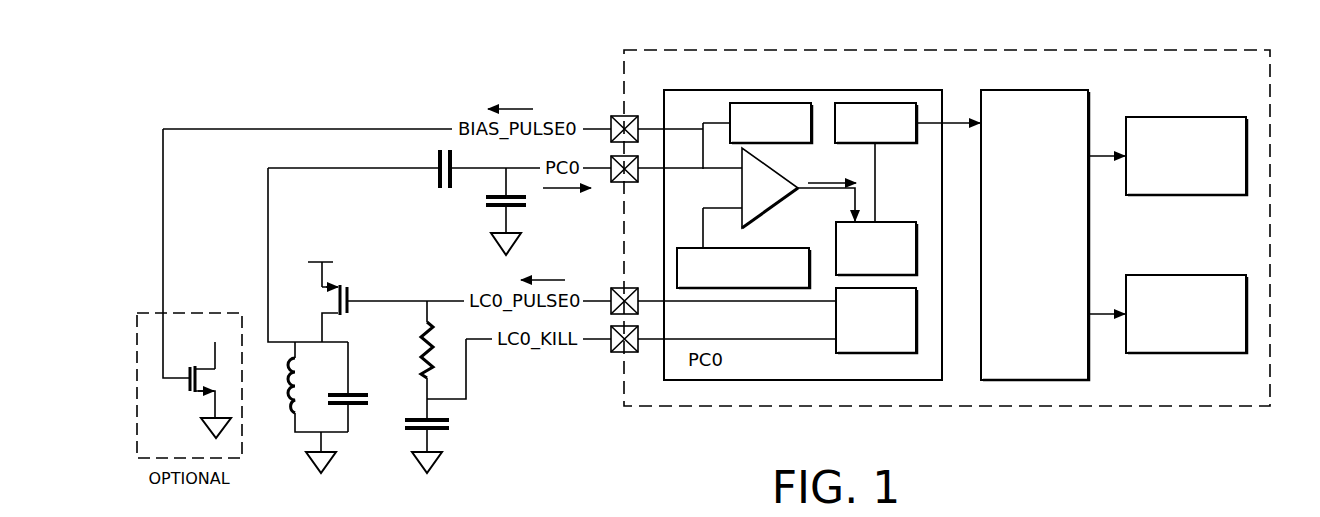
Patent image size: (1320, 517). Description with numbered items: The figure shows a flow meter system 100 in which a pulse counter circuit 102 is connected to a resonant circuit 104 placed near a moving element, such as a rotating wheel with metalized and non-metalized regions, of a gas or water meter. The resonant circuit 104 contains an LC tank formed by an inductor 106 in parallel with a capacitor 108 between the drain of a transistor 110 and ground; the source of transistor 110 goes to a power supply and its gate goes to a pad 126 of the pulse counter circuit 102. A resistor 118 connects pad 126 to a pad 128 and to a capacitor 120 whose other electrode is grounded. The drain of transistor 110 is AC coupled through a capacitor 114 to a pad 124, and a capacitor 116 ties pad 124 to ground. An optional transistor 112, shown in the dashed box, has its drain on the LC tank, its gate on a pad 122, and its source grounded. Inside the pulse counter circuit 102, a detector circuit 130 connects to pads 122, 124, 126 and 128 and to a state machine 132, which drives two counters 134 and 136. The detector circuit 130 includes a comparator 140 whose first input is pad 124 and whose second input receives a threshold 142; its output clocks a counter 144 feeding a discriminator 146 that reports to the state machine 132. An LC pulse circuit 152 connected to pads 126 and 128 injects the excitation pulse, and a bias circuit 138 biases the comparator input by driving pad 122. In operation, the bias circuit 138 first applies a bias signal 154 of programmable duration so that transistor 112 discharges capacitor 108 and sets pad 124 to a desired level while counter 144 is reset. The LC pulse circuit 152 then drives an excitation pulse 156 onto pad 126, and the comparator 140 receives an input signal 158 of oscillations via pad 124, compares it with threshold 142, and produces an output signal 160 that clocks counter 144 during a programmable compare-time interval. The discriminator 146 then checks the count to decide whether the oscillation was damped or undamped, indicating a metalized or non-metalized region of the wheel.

The flow meter system 100 is at (205, 88).
The pulse counter circuit 102 is at (1131, 81).
The resonant circuit 104 is at (360, 118).
The inductor 106 is at (289, 414).
The capacitor 108 is at (362, 394).
The transistor 110 is at (336, 302).
The optional transistor 112 is at (191, 367).
The capacitor 114 is at (438, 186).
The capacitor 116 is at (486, 207).
The resistor 118 is at (420, 354).
The capacitor 120 is at (406, 430).
The pad 122 is at (611, 120).
The pad 124 is at (612, 182).
The pad 126 is at (611, 291).
The pad 128 is at (612, 352).
The detector circuit 130 is at (712, 90).
The state machine 132 is at (1031, 297).
The counter 134 is at (1200, 117).
The counter 136 is at (1200, 275).
The bias circuit 138 is at (730, 113).
The comparator 140 is at (778, 203).
The threshold 142 is at (684, 247).
The counter 144 is at (900, 222).
The discriminator 146 is at (905, 143).
The LC pulse circuit 152 is at (836, 348).
The bias signal 154 is at (518, 109).
The excitation pulse 156 is at (545, 280).
The input signal 158 is at (548, 188).
The output signal 160 is at (828, 183).